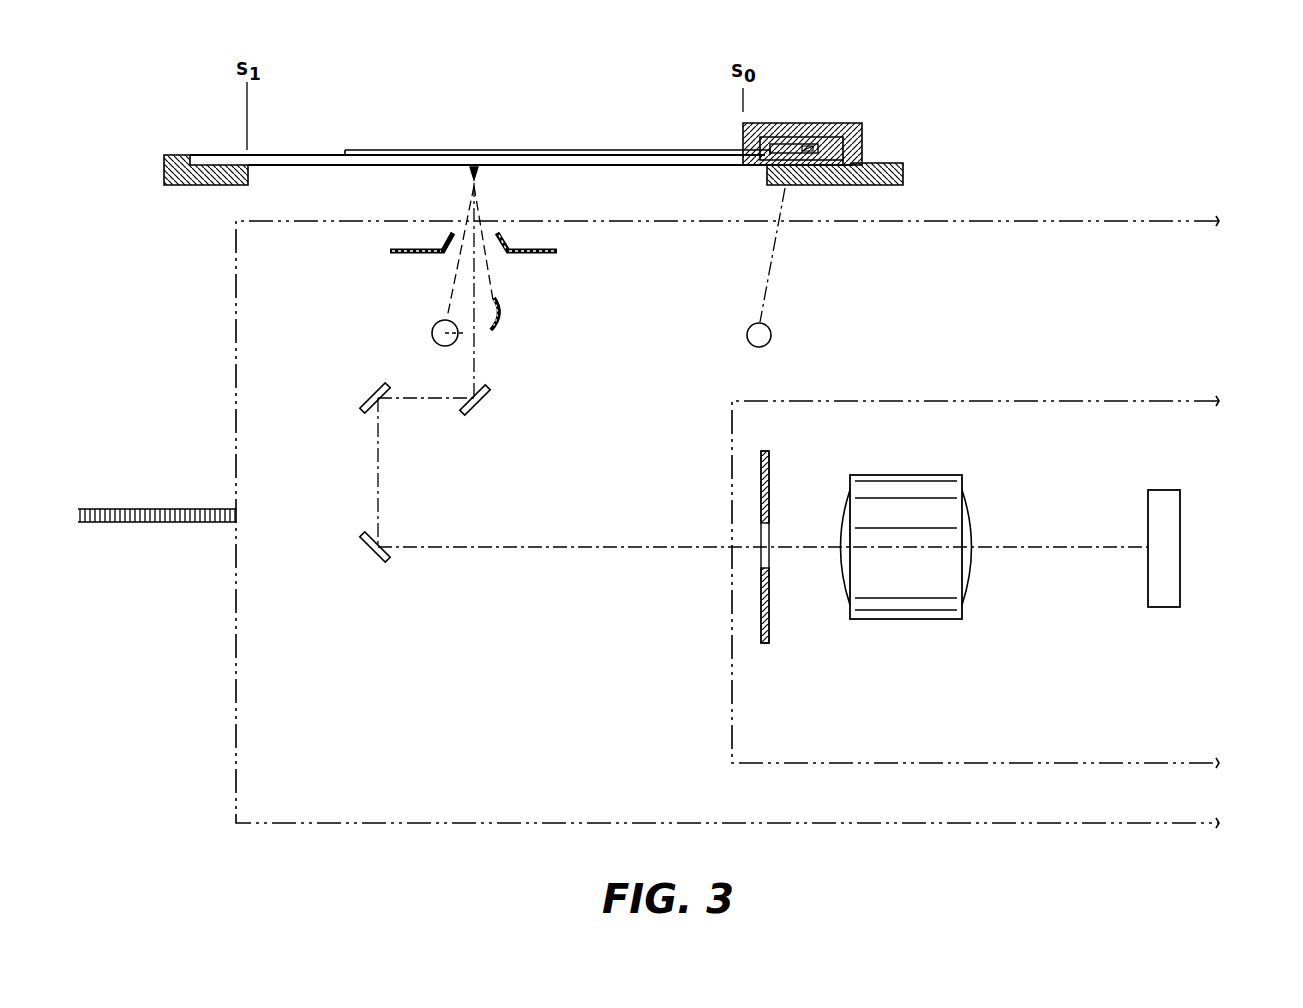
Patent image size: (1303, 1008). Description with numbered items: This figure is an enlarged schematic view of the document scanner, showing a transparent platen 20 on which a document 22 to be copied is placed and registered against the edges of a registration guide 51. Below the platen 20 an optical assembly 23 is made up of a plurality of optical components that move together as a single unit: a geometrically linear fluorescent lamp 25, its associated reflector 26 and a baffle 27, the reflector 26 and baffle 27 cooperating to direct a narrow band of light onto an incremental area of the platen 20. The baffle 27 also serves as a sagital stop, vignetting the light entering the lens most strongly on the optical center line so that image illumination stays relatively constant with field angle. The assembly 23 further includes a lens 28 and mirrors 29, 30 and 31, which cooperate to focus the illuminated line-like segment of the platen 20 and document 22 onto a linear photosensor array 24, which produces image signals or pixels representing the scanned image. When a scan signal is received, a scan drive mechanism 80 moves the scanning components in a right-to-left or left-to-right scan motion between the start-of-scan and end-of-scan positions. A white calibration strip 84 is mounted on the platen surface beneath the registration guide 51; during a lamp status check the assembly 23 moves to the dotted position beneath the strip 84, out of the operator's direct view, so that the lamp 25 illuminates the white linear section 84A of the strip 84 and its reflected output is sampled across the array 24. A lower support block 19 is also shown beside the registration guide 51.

The support block 19 is at (813, 185).
The transparent platen 20 is at (308, 160).
The document 22 is at (497, 150).
The optical assembly 23 is at (1164, 176).
The linear photosensor array 24 is at (1153, 596).
The fluorescent lamp 25 is at (432, 333).
The reflector 26 is at (500, 318).
The baffle 27 is at (557, 252).
The lens 28 is at (905, 487).
The mirror 29 is at (478, 402).
The mirror 30 is at (357, 405).
The mirror 31 is at (373, 549).
The registration guide 51 is at (805, 143).
The scan drive mechanism 80 is at (148, 525).
The white calibration strip 84 is at (788, 140).
The white linear section 84A is at (862, 137).